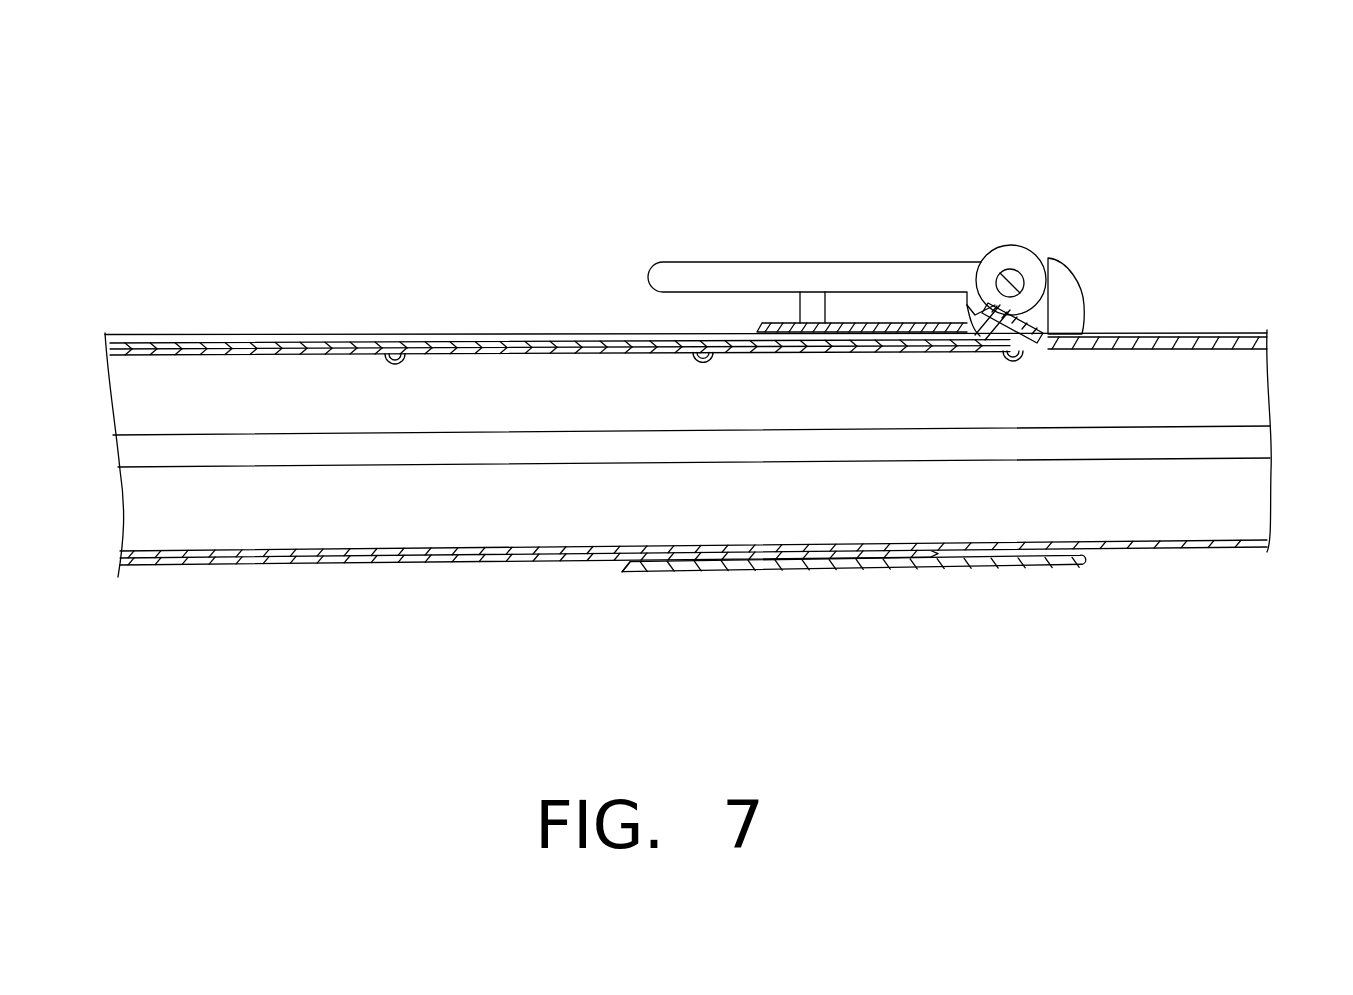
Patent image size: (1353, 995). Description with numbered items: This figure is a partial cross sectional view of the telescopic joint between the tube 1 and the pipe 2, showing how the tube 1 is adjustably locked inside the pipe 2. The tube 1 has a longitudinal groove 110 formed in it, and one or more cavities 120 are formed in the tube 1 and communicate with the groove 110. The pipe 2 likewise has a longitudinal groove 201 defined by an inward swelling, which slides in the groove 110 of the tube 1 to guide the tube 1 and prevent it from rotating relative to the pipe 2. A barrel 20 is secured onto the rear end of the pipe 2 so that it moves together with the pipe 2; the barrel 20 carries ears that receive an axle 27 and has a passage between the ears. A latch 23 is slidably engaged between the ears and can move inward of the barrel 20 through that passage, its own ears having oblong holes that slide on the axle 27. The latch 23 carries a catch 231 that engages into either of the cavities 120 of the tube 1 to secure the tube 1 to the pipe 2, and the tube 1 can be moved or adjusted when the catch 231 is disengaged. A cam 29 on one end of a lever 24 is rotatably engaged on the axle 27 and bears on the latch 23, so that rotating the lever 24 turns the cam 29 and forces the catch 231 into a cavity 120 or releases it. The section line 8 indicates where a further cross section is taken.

The tube 1 is at (1132, 550).
The pipe 2 is at (410, 565).
The section line 8- 8 is at (108, 453).
The barrel 20 is at (1060, 263).
The latch 23 is at (982, 266).
The lever 24 is at (832, 272).
The axle 27 is at (1009, 266).
The cam 29 is at (1005, 310).
The longitudinal groove 110 is at (1222, 334).
The cavities 120 is at (388, 367).
The longitudinal groove 201 is at (462, 340).
The catch 231 is at (1047, 330).